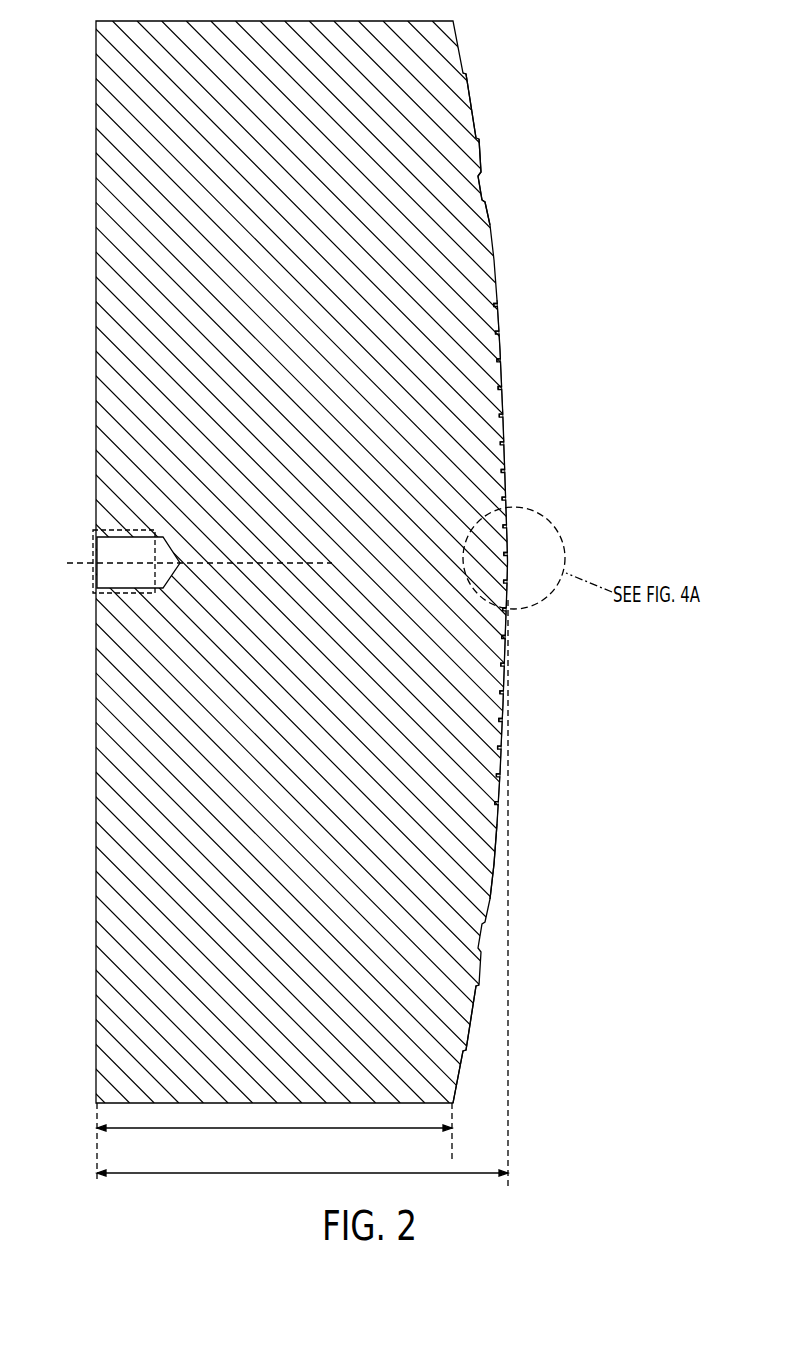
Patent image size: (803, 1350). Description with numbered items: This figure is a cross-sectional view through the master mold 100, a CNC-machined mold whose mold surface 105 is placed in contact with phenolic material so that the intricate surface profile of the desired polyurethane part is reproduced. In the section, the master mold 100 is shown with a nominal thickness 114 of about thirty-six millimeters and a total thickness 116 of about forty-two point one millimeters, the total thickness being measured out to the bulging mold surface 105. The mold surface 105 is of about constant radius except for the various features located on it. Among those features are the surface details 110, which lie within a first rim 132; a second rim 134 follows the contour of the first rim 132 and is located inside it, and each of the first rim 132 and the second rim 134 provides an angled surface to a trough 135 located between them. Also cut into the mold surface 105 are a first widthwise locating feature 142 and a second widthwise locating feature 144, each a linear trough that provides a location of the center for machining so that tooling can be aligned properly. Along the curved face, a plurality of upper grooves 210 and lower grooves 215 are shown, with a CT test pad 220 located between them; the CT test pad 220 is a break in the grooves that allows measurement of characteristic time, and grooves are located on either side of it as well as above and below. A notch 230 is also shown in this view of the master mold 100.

The master mold 100 is at (610, 977).
The mold surface 105 is at (503, 832).
The surface details 110 is at (566, 748).
The nominal thickness 114 is at (213, 1128).
The total thickness 116 is at (463, 1176).
The first rim 132 is at (481, 176).
The second rim 134 is at (487, 216).
The trough 135 is at (483, 197).
The first widthwise locating feature 142 is at (472, 118).
The second widthwise locating feature 144 is at (467, 1028).
The upper grooves 210 is at (496, 305).
The lower grooves 215 is at (506, 582).
The CT test pad 220 is at (511, 556).
The notch 230 is at (97, 587).